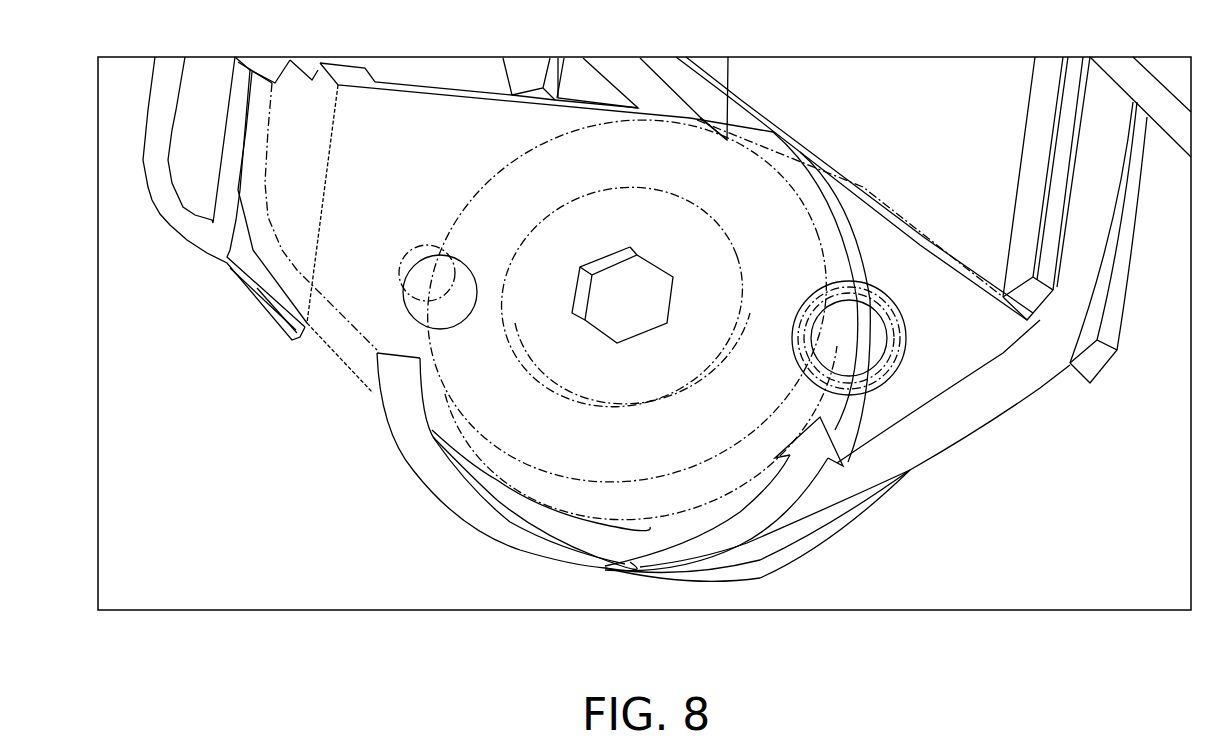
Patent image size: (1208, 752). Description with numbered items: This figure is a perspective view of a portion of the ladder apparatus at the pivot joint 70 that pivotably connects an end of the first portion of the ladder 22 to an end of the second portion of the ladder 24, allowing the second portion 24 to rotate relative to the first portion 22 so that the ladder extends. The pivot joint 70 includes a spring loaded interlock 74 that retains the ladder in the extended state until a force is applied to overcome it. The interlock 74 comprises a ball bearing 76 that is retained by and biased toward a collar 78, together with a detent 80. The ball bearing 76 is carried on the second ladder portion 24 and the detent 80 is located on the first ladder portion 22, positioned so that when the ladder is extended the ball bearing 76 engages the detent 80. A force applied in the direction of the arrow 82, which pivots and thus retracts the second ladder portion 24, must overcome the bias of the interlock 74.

The first portion of the ladder 22 is at (185, 128).
The second portion of the ladder 24 is at (918, 97).
The pivot joint 70 is at (496, 570).
The spring loaded interlock 74 is at (453, 330).
The ball bearing 76 is at (880, 318).
The collar 78 is at (885, 348).
The detent 80 is at (405, 266).
The arrow 82 is at (633, 562).